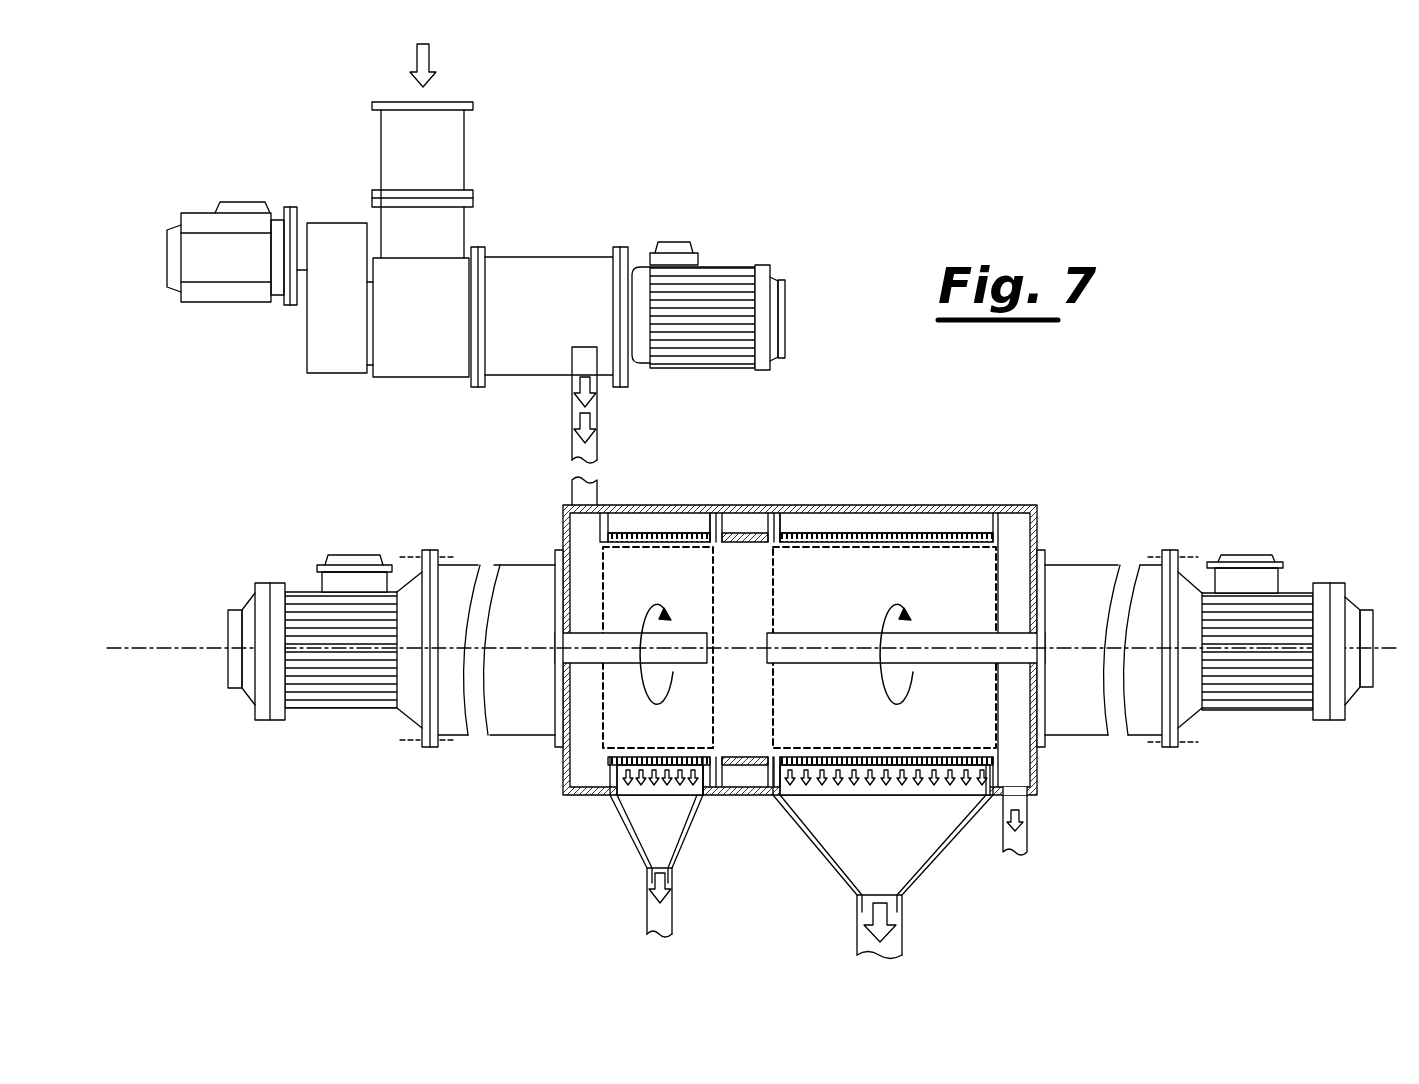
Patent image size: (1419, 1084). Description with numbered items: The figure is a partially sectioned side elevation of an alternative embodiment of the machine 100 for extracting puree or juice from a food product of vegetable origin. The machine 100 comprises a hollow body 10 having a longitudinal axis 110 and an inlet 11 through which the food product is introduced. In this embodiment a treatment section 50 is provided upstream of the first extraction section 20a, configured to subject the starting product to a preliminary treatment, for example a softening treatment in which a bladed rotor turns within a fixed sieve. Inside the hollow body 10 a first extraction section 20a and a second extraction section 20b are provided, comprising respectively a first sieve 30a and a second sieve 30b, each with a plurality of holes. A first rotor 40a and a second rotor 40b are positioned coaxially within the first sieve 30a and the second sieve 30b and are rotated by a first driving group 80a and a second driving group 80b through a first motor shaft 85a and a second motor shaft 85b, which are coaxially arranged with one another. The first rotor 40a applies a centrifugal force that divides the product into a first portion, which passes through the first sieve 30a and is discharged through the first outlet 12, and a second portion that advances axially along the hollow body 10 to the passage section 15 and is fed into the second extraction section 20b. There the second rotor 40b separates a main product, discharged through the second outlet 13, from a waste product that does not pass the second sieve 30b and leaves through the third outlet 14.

The hollow body 10 is at (1152, 503).
The inlet 11 is at (563, 485).
The first outlet 12 is at (647, 803).
The second outlet 13 is at (928, 812).
The third outlet 14 is at (1035, 838).
The passage section 15 is at (740, 547).
The first extraction section 20a is at (665, 527).
The second extraction section 20b is at (932, 527).
The first sieve 30a is at (690, 527).
The second sieve 30b is at (887, 527).
The first rotor 40a is at (598, 735).
The second rotor 40b is at (1010, 753).
The treatment section 50 is at (572, 235).
The first driving group 80a is at (340, 543).
The second driving group 80b is at (1237, 740).
The first motor shaft 85a is at (595, 631).
The second motor shaft 85b is at (975, 618).
The machine 100 is at (240, 857).
The longitudinal axis 110 is at (152, 647).